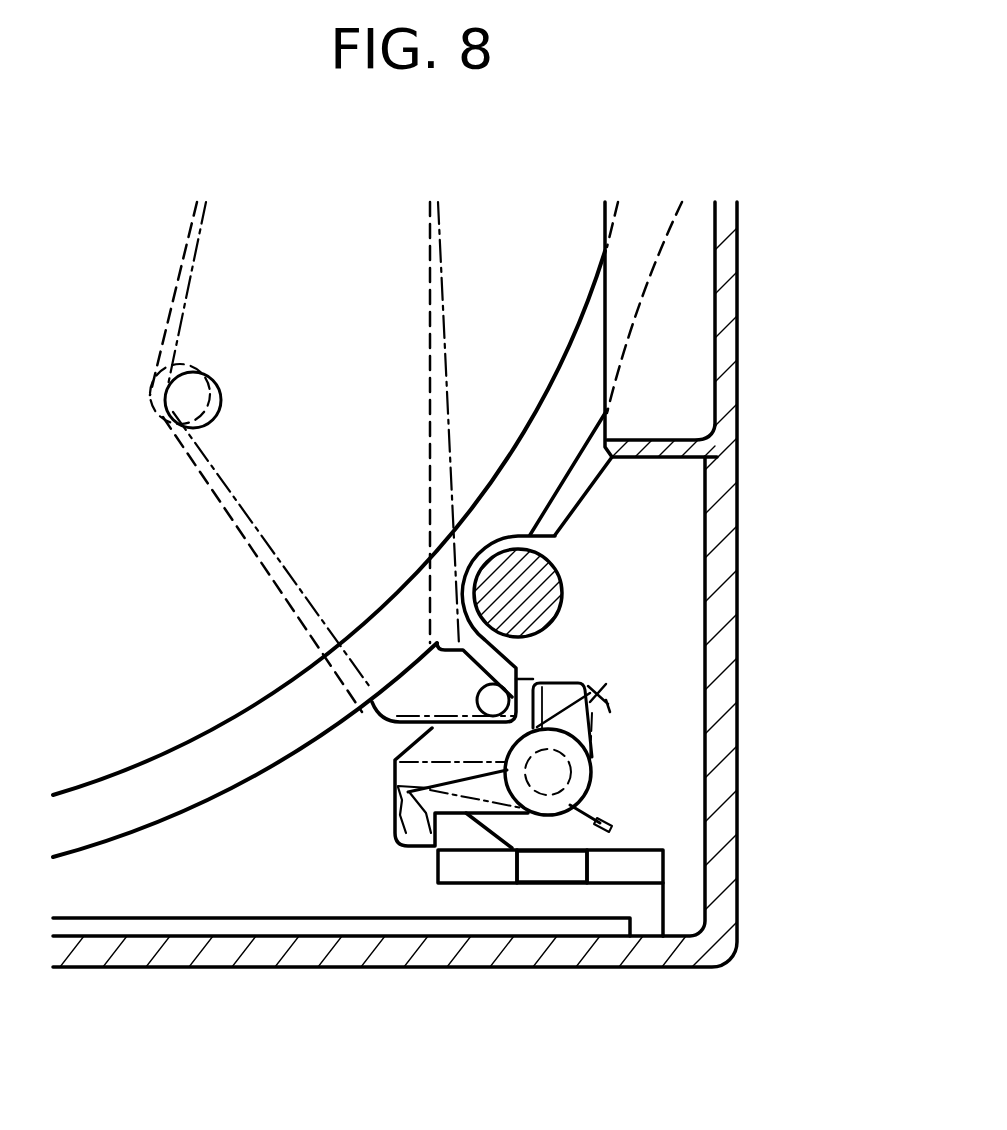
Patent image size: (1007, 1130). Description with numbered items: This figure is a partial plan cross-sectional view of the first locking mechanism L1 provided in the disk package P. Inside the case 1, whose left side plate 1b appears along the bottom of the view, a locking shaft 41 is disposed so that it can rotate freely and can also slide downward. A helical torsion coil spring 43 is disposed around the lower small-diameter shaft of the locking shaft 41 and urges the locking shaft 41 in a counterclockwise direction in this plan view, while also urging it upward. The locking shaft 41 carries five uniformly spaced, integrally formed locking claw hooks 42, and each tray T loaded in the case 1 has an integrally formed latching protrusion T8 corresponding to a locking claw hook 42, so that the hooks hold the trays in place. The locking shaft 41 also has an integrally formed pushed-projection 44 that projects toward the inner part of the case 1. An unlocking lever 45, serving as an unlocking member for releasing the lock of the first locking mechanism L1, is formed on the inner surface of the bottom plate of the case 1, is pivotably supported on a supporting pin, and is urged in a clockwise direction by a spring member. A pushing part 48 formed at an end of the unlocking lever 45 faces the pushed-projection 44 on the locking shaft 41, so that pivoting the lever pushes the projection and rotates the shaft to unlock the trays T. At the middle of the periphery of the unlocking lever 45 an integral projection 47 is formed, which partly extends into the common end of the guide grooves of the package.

The case 1 is at (292, 979).
The left side plate 1b is at (188, 950).
The disk package P is at (767, 428).
The side wall e is at (727, 620).
The tray T is at (107, 813).
The latching protrusion T8 is at (463, 838).
The first locking mechanism L1 is at (545, 837).
The locking shaft 41 is at (588, 762).
The locking claw hook 42 is at (400, 845).
The helical torsion coil spring 43 is at (590, 800).
The pushed-projection 44 is at (560, 682).
The unlocking lever 45 is at (257, 560).
The projection 47 is at (150, 410).
The pushing part 48 is at (523, 663).